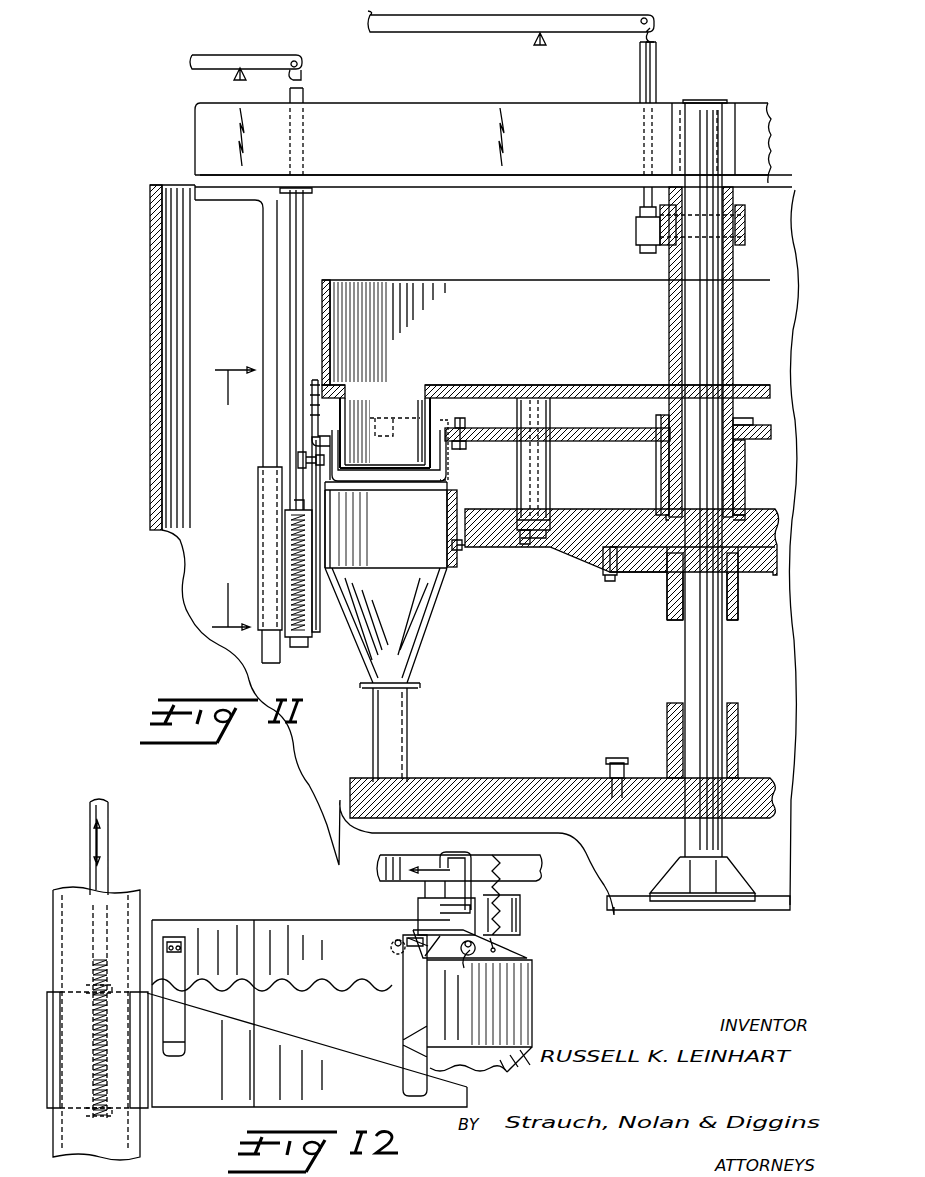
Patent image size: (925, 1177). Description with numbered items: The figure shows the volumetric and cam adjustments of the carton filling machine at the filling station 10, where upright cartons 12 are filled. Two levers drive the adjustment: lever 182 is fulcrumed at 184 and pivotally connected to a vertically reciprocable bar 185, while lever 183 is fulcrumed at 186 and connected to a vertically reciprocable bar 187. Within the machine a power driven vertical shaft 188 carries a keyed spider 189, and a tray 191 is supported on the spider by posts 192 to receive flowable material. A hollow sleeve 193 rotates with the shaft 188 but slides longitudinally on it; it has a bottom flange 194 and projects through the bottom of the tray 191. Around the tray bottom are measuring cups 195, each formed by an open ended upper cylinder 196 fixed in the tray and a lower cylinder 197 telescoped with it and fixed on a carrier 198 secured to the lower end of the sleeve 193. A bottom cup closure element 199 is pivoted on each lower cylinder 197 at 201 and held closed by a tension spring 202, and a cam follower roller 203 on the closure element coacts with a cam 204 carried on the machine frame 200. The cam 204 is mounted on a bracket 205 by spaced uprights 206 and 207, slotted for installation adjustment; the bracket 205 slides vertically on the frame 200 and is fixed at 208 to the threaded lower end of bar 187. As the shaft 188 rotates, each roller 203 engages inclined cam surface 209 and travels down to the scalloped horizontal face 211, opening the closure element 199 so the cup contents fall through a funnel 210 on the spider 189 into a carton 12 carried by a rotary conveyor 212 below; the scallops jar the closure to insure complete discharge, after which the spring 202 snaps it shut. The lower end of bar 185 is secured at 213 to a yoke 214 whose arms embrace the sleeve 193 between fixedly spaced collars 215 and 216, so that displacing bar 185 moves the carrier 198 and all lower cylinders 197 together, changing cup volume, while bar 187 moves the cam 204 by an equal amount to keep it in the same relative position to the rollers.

In FIG. 11, the filling station 10 is at (150, 225).
In FIG. 11, the carton 12 is at (407, 708).
In FIG. 11, the lever 182 is at (446, 20).
In FIG. 11, the lever 183 is at (192, 61).
In FIG. 11, the fulcrum 184 is at (546, 45).
In FIG. 11, the vertically reciprocable bar 185 is at (640, 72).
In FIG. 11, the fulcrum 186 is at (231, 80).
In FIG. 11, the vertically reciprocable bar 187 is at (304, 225).
In FIG. 12, the vertically reciprocable bar 187 is at (108, 812).
In FIG. 11, the power driven vertical shaft 188 is at (711, 100).
In FIG. 11, the spider 189 is at (588, 510).
In FIG. 11, the tray 191 is at (432, 284).
In FIG. 12, the tray 191 is at (380, 856).
In FIG. 11, the post 192 is at (548, 449).
In FIG. 11, the hollow sleeve 193 is at (668, 263).
In FIG. 11, the bottom flange 194 is at (661, 496).
In FIG. 11, the measuring cup 195 is at (398, 410).
In FIG. 11, the upper cylinder 196 is at (432, 405).
In FIG. 12, the upper cylinder 196 is at (425, 885).
In FIG. 11, the lower cylinder 197 is at (454, 442).
In FIG. 12, the lower cylinder 197 is at (530, 916).
In FIG. 11, the carrier 198 is at (765, 425).
In FIG. 11, the bottom cup closure element 199 is at (446, 480).
In FIG. 12, the bottom cup closure element 199 is at (528, 945).
In FIG. 11, the machine frame 200 is at (263, 330).
In FIG. 12, the machine frame 200 is at (140, 905).
In FIG. 12, the pivot 201 is at (390, 939).
In FIG. 11, the tension spring 202 is at (312, 406).
In FIG. 12, the tension spring 202 is at (513, 883).
In FIG. 11, the cam follower roller 203 is at (327, 488).
In FIG. 12, the cam follower roller 203 is at (470, 961).
In FIG. 11, the cam 204 is at (298, 462).
In FIG. 12, the cam 204 is at (250, 920).
In FIG. 11, the bracket 205 is at (315, 586).
In FIG. 12, the bracket 205 is at (286, 1042).
In FIG. 11, the upright 206 is at (312, 498).
In FIG. 12, the upright 206 is at (403, 1000).
In FIG. 12, the upright 207 is at (187, 987).
In FIG. 11, the fixing point 208 is at (300, 634).
In FIG. 12, the fixing point 208 is at (92, 1116).
In FIG. 11, the inclined cam surface 209 is at (326, 509).
In FIG. 12, the inclined cam surface 209 is at (431, 960).
In FIG. 11, the funnel 210 is at (445, 585).
In FIG. 12, the horizontal cam face 211 is at (320, 975).
In FIG. 11, the rotary conveyor 212 is at (517, 778).
In FIG. 11, the securing point 213 is at (636, 233).
In FIG. 11, the yoke 214 is at (636, 216).
In FIG. 11, the collar 215 is at (740, 237).
In FIG. 11, the collar 216 is at (740, 214).